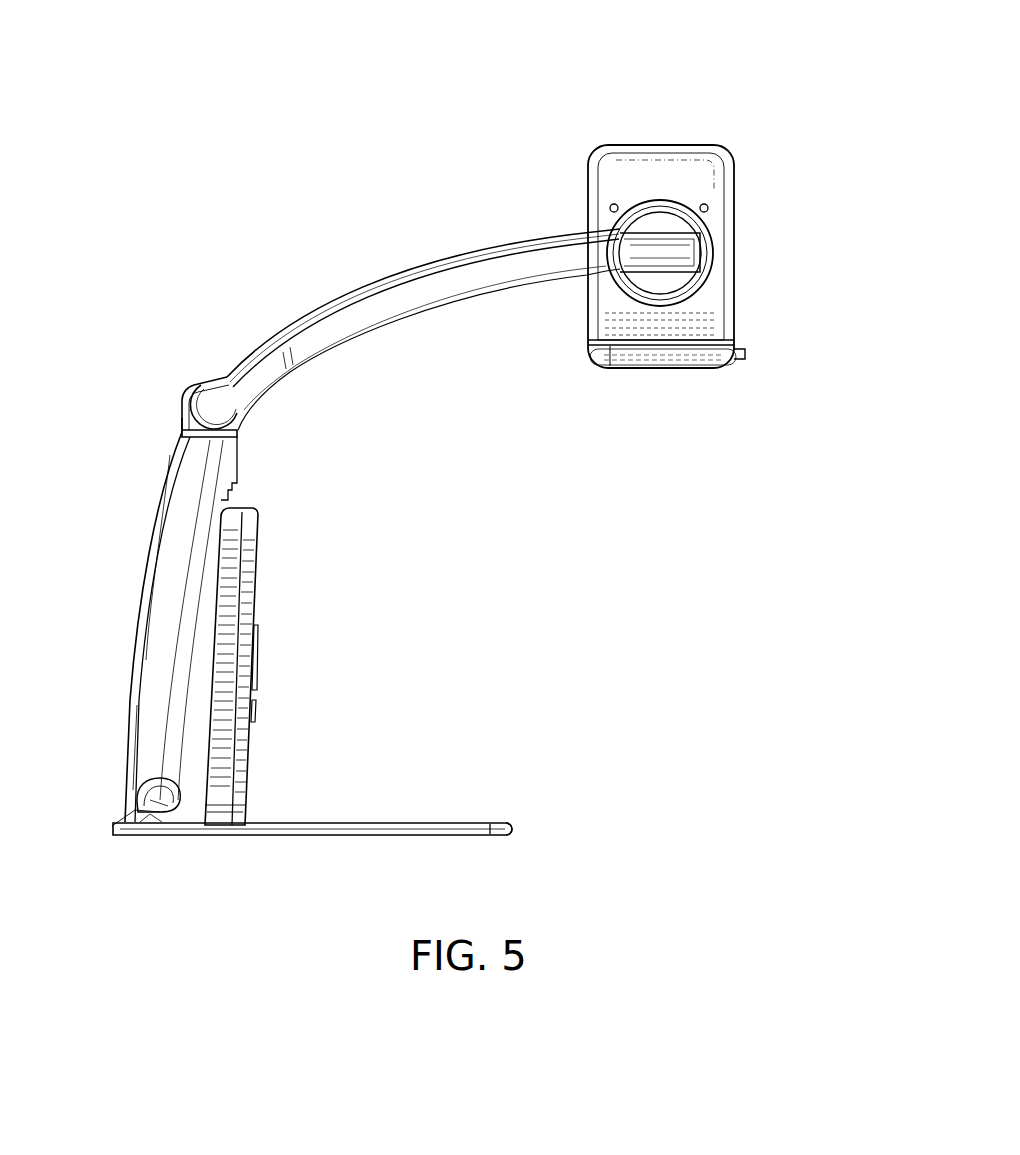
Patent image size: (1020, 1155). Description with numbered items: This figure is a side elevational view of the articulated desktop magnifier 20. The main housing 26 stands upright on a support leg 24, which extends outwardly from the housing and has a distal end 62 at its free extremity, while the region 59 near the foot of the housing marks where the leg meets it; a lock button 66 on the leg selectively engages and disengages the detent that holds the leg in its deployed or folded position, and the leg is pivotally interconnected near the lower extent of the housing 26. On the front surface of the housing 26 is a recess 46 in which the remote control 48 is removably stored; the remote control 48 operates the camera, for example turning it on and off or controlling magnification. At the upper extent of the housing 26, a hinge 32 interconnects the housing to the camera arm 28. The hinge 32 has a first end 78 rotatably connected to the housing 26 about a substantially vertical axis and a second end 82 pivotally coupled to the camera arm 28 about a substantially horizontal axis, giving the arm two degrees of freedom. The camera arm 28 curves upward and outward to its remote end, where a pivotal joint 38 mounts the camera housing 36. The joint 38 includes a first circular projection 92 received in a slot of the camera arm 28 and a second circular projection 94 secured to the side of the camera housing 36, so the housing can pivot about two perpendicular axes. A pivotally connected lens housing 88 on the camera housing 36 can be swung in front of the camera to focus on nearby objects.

The desktop magnifier 20 is at (752, 73).
The second support leg 24 is at (410, 823).
The main housing 26 is at (148, 652).
The camera arm 28 is at (418, 265).
The hinge 32 is at (208, 395).
The camera housing 36 is at (712, 173).
The joint 38 is at (700, 253).
The recess 46 is at (238, 510).
The remote control 48 is at (243, 786).
The base mount 59 is at (150, 825).
The distal end 62 is at (518, 828).
The lock button 66 is at (137, 800).
The first end 78 is at (182, 418).
The second end 82 is at (215, 398).
The lens housing 88 is at (680, 352).
The first circular projection 92 is at (628, 250).
The second circular projection 94 is at (655, 215).